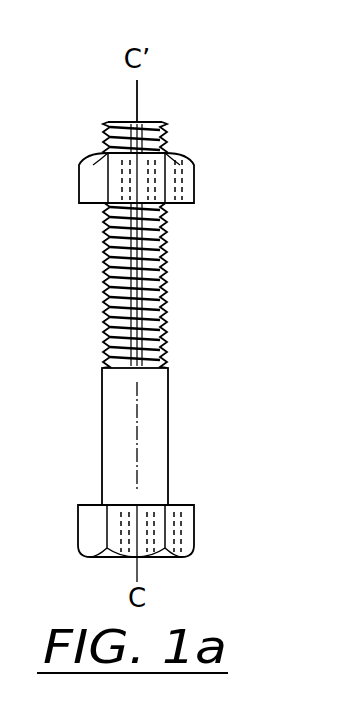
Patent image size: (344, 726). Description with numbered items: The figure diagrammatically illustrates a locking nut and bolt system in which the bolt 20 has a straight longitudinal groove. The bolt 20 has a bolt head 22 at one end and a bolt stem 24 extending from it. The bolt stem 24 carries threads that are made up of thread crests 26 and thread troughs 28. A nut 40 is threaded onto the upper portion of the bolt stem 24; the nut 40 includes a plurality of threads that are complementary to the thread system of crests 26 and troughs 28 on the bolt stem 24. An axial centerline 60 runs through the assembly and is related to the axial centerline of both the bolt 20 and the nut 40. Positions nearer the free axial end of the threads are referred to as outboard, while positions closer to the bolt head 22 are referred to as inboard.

The bolt 20 is at (178, 339).
The bolt head 22 is at (194, 524).
The bolt stem 24 is at (170, 450).
The thread crests 26 is at (167, 307).
The thread troughs 28 is at (167, 268).
The nut 40 is at (202, 157).
The axial centerline 60 is at (137, 100).